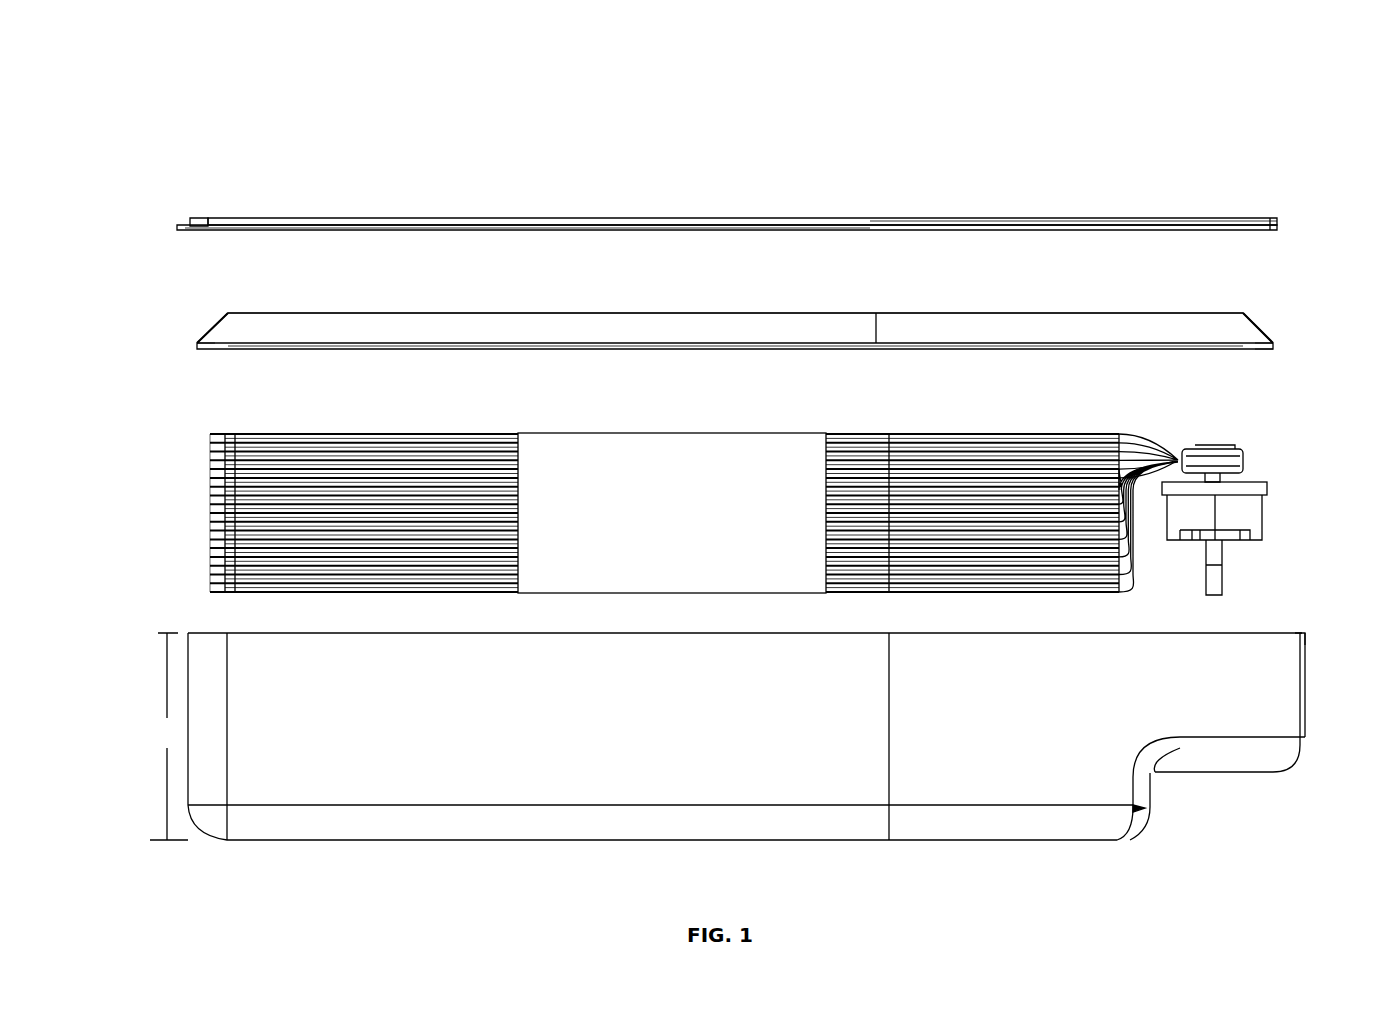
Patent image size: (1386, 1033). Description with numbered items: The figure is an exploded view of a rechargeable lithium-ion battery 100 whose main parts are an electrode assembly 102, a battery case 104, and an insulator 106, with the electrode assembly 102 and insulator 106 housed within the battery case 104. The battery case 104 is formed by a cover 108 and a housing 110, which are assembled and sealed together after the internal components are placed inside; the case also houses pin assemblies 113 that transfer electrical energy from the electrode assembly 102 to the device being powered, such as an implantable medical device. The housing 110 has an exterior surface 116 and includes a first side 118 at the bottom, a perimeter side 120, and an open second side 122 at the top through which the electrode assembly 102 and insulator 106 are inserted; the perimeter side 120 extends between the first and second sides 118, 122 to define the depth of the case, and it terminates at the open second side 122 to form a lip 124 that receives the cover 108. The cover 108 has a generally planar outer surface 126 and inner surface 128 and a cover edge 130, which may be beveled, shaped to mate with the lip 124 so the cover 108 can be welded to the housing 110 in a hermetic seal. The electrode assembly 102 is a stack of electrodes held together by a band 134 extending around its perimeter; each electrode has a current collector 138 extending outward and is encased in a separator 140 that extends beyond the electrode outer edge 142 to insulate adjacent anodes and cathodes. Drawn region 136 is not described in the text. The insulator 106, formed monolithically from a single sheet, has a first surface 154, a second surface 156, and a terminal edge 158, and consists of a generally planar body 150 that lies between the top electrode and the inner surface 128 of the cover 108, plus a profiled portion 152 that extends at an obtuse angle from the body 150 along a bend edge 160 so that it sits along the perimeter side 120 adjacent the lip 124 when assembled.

The battery 100 is at (1215, 96).
The electrode assembly 102 is at (732, 488).
The battery case 104 is at (670, 515).
The insulator 106 is at (708, 332).
The cover 108 is at (719, 191).
The housing 110 is at (719, 724).
The pin assemblies 113 is at (1268, 508).
The exterior surface 116 is at (1150, 785).
The first side 118 is at (352, 848).
The perimeter side 120 is at (1307, 672).
The open second side 122 is at (1237, 633).
The lip 124 is at (1302, 630).
The outer surface 126 is at (968, 216).
The inner surface 128 is at (405, 232).
The cover edge 130 is at (1282, 222).
The band 134 is at (766, 433).
The cell group 136 is at (420, 433).
The current collector 138 is at (1165, 450).
The separator 140 is at (212, 480).
The outer edge 142 is at (224, 433).
The body 150 is at (1030, 312).
The profiled portion 152 is at (202, 338).
The first surface 154 is at (708, 312).
The second surface 156 is at (665, 350).
The terminal edge 158 is at (1274, 352).
The bend edge 160 is at (227, 312).